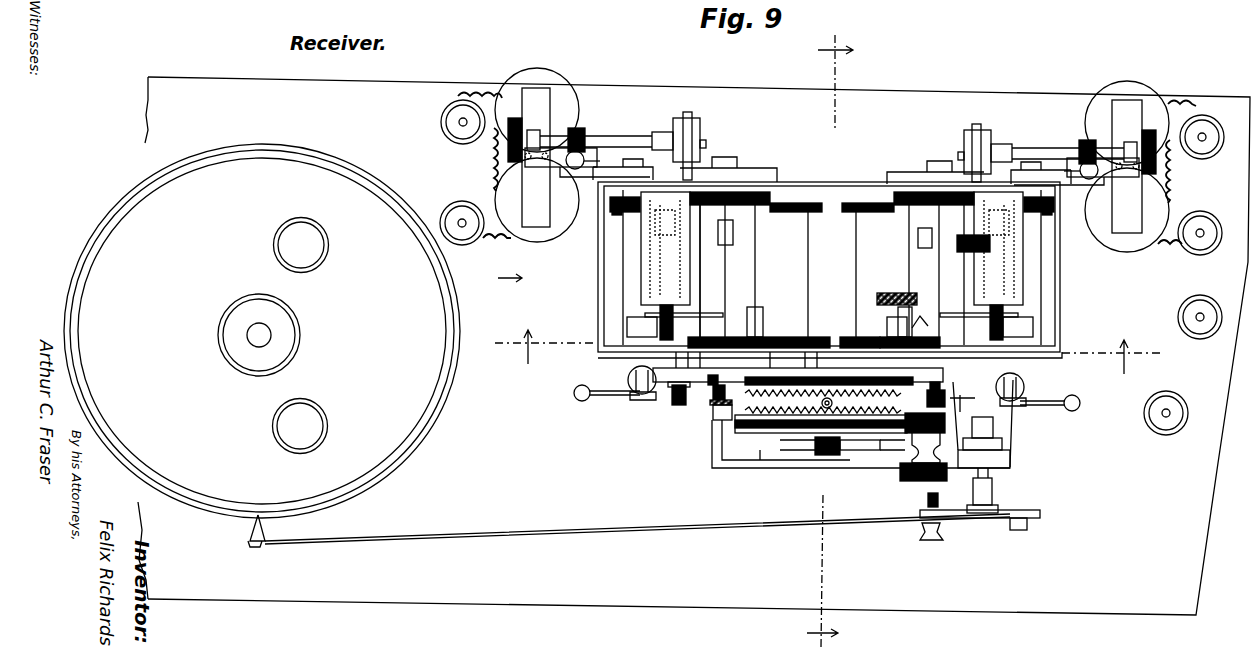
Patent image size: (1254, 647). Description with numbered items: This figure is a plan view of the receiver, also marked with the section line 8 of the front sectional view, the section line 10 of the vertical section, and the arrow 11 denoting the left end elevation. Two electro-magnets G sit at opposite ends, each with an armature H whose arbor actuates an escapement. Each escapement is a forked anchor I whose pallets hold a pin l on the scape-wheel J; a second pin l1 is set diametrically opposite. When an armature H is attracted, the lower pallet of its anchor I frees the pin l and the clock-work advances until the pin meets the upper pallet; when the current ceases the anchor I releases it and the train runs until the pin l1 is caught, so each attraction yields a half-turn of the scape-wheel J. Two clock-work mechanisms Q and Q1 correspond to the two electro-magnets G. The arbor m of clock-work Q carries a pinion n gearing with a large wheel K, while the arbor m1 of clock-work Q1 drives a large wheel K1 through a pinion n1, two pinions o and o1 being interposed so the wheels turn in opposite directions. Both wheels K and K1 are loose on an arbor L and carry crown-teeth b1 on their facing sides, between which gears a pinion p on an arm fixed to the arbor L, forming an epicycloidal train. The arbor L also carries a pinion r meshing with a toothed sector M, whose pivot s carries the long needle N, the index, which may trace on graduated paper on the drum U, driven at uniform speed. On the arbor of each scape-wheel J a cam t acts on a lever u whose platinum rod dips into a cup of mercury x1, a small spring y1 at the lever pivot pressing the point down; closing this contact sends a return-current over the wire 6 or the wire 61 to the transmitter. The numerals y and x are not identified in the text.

The drum U is at (262, 331).
The armature H is at (832, 160).
The electro-magnet G is at (827, 169).
The pin l is at (635, 318).
The pin l1 is at (708, 325).
The arbor m is at (733, 275).
The arbor m1 is at (926, 285).
The clock-work mechanism Q is at (759, 308).
The clock-work mechanism Q1 is at (891, 301).
The anchor I is at (627, 325).
The scape-wheel J is at (723, 315).
The pinion o is at (905, 332).
The pinion o1 is at (918, 319).
The large wheel K is at (798, 368).
The large wheel K1 is at (821, 432).
The pinion p is at (818, 402).
The crown-teeth b1 is at (823, 404).
The pinion n is at (726, 402).
The pinion n1 is at (923, 447).
The pinion r is at (815, 450).
The toothed sector M is at (842, 459).
The arbor L is at (823, 520).
The cam t is at (690, 400).
The catch y is at (928, 404).
The spring y1 is at (708, 410).
The lever u is at (655, 390).
The arm x is at (1022, 408).
The cup of mercury x1 is at (637, 402).
The wire 6 is at (1050, 415).
The wire 61 is at (607, 388).
The pivot s is at (992, 472).
The needle N is at (629, 530).
The section line 8 is at (826, 352).
The section line 10 is at (830, 334).
The arrow 11 is at (502, 273).